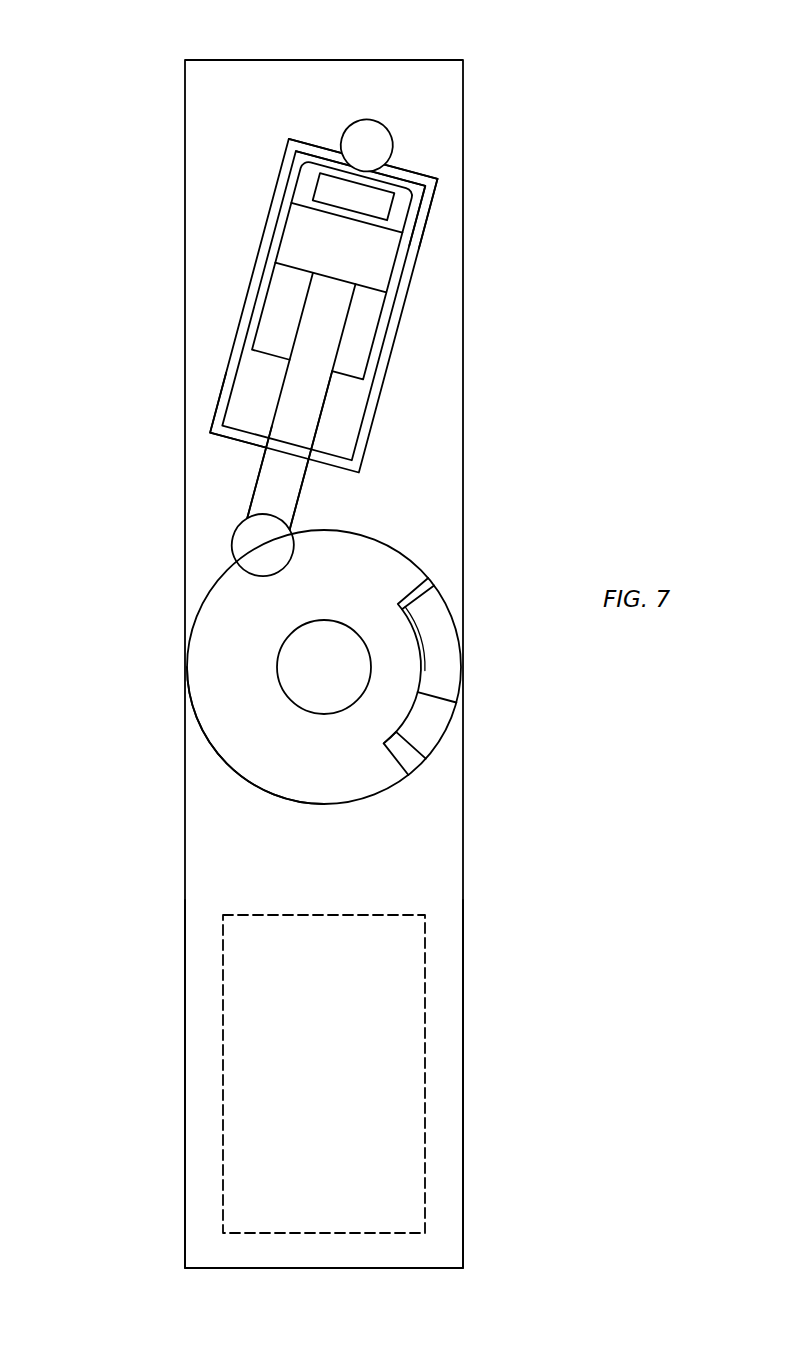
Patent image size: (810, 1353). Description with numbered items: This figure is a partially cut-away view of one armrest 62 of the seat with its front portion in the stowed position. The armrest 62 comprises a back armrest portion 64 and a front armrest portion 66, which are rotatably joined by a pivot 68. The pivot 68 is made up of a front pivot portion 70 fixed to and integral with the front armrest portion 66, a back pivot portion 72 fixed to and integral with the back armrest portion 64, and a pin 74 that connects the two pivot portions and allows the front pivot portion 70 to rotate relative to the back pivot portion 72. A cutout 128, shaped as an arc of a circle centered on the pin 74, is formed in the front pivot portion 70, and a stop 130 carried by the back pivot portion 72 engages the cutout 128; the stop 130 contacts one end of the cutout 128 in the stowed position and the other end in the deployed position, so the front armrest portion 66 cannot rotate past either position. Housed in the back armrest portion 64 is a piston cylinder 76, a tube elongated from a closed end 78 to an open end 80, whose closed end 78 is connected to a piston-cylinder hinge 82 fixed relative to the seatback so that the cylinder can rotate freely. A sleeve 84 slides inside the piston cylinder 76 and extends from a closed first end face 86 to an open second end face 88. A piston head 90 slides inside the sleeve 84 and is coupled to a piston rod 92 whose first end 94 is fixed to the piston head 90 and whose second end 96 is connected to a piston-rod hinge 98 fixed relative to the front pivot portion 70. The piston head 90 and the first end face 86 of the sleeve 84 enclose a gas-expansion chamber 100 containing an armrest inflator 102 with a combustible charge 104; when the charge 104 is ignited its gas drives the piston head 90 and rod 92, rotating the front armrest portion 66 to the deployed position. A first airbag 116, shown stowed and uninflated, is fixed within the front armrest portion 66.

The armrest 62 is at (86, 217).
The back armrest portion 64 is at (465, 432).
The front armrest portion 66 is at (465, 1093).
The pivot 68 is at (187, 660).
The front pivot portion 70 is at (213, 768).
The back pivot portion 72 is at (453, 732).
The pin 74 is at (333, 712).
The piston cylinder 76 is at (402, 322).
The closed end 78 is at (397, 163).
The open end 80 is at (232, 440).
The piston-cylinder hinge 82 is at (371, 118).
The sleeve 84 is at (375, 368).
The first end face 86 is at (420, 187).
The second end face 88 is at (265, 362).
The piston head 90 is at (398, 267).
The piston rod 92 is at (313, 435).
The first end 94 is at (340, 276).
The second end 96 is at (243, 505).
The piston-rod hinge 98 is at (231, 548).
The gas-expansion chamber 100 is at (425, 210).
The armrest inflator 102 is at (287, 155).
The charge 104 is at (313, 197).
The first airbag 116 is at (427, 965).
The cutout 128 is at (427, 760).
The stop 130 is at (418, 592).